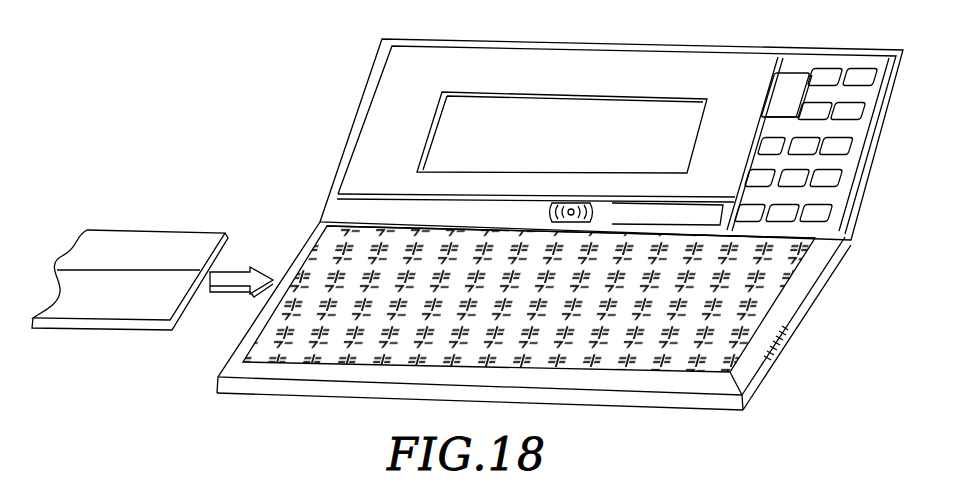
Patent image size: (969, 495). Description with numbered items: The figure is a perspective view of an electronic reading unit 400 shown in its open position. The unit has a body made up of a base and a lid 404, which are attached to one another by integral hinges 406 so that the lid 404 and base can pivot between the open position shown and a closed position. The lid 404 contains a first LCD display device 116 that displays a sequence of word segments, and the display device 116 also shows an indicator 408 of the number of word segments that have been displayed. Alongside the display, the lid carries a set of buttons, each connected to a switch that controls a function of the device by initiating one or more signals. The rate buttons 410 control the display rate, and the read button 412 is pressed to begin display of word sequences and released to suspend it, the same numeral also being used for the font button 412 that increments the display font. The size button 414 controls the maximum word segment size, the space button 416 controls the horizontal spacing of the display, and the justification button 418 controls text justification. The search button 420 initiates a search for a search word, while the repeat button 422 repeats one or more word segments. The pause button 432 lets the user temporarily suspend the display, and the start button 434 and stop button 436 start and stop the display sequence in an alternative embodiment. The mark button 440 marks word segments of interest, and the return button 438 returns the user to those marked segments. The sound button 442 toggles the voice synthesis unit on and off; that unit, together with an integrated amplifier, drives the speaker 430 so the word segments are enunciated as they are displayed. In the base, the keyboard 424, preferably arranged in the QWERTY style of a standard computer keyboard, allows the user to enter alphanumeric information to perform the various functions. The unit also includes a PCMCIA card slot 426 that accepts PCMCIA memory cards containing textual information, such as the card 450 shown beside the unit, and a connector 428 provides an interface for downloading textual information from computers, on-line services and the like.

The electronic reading unit 400 is at (300, 90).
The lid 404 is at (530, 42).
The integral hinges 406 is at (328, 218).
The indicator 408 is at (628, 94).
The first LCD display device 116 is at (470, 90).
The rate buttons 410 is at (847, 240).
The read button 412 is at (757, 173).
The size button 414 is at (737, 197).
The space button 416 is at (845, 240).
The justification button 418 is at (697, 207).
The search button 420 is at (768, 133).
The repeat button 422 is at (833, 207).
The keyboard 424 is at (315, 247).
The PCMCIA card slot 426 is at (233, 350).
The connector 428 is at (783, 350).
The speaker 430 is at (547, 212).
The pause button 432 is at (827, 157).
The start button 434 is at (777, 57).
The stop button 436 is at (820, 68).
The return button 438 is at (800, 110).
The mark button 440 is at (863, 113).
The sound button 442 is at (863, 70).
The card 450 is at (135, 227).